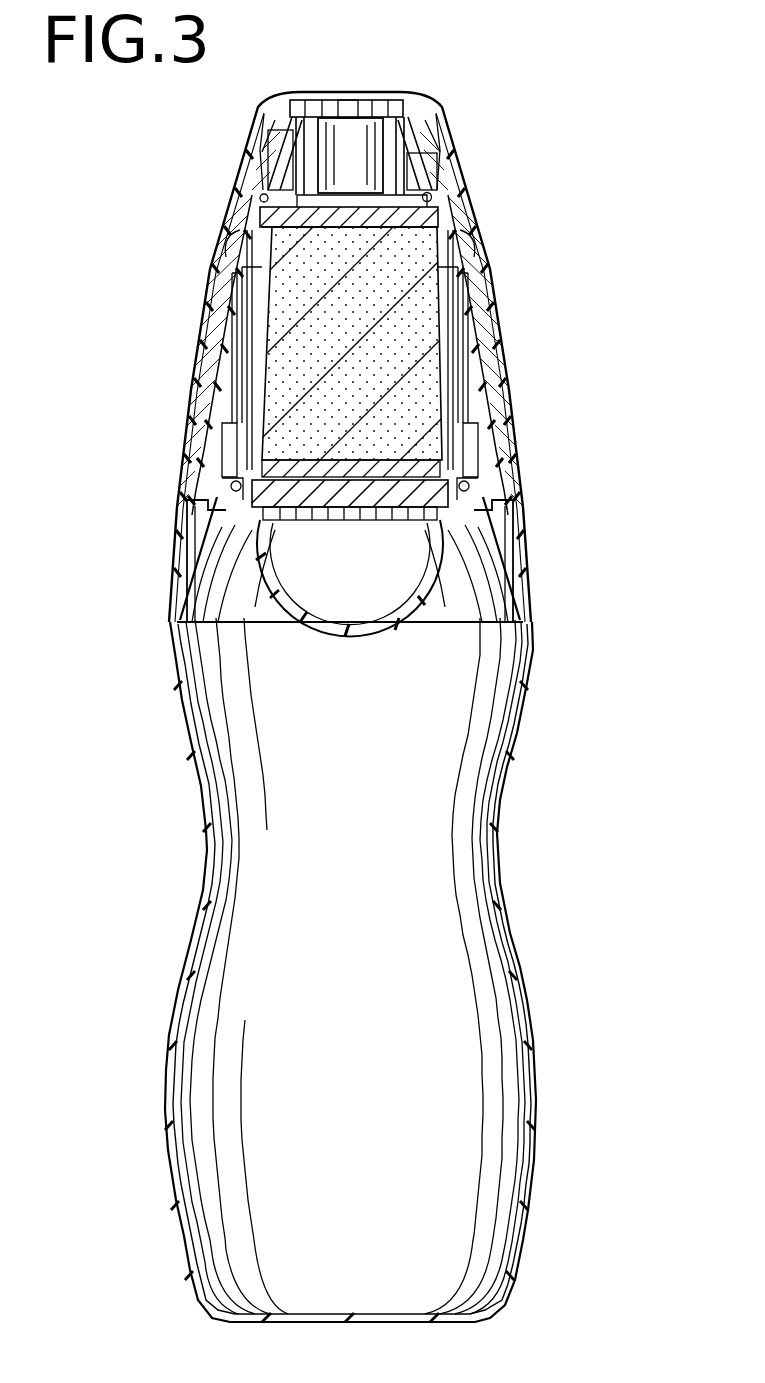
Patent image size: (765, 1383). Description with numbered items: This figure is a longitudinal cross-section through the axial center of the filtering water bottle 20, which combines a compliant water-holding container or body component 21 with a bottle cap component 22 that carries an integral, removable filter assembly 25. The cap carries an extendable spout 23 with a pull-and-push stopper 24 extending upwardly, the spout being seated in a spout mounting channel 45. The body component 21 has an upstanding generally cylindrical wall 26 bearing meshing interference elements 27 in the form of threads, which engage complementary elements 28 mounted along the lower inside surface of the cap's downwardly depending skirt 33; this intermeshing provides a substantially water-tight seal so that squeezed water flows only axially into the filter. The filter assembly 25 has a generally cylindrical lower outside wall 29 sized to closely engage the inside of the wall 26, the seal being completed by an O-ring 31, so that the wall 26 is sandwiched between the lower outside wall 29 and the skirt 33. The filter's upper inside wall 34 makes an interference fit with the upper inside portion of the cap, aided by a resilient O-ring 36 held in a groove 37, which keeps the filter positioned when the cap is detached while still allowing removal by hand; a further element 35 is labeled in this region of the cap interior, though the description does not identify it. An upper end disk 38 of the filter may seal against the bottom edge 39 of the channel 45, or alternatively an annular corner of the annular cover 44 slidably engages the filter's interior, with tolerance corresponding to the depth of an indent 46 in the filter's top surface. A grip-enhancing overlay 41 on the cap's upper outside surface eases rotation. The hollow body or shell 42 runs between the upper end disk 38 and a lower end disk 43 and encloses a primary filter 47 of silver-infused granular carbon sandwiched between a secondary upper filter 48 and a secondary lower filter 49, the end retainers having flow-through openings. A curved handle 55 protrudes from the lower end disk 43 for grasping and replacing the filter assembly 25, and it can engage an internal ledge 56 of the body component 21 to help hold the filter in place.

The filtering water bottle 20 is at (547, 674).
The water-holding container or body component 21 is at (530, 979).
The bottle cap component 22 is at (522, 441).
The extendable spout 23 is at (405, 110).
The pull-and-push stopper 24 is at (352, 112).
The filter assembly 25 is at (240, 276).
The upstanding generally cylindrical wall 26 is at (200, 540).
The meshing interference elements 27 is at (232, 462).
The complementary elements 28 is at (450, 470).
The generally cylindrical lower outside wall 29 is at (233, 485).
The O-ring 31 is at (228, 492).
The downwardly depending skirt 33 is at (205, 408).
The upper inside wall 34 is at (258, 212).
The retaining bead 35 is at (435, 200).
The O-ring 36 is at (262, 190).
The groove 37 is at (270, 185).
The upper end disk 38 is at (300, 142).
The bottom edge 39 is at (410, 172).
The grip-enhancing overlay 41 is at (510, 330).
The hollow body or shell 42 is at (265, 330).
The lower end disk 43 is at (432, 495).
The annular corner / annular cover 44 is at (262, 152).
The spout mounting channel 45 is at (440, 150).
The indent 46 is at (340, 118).
The primary filter 47 is at (432, 300).
The secondary upper filter 48 is at (412, 222).
The secondary lower filter 49 is at (405, 465).
The curved handle 55 is at (255, 547).
The ledge 56 is at (440, 620).